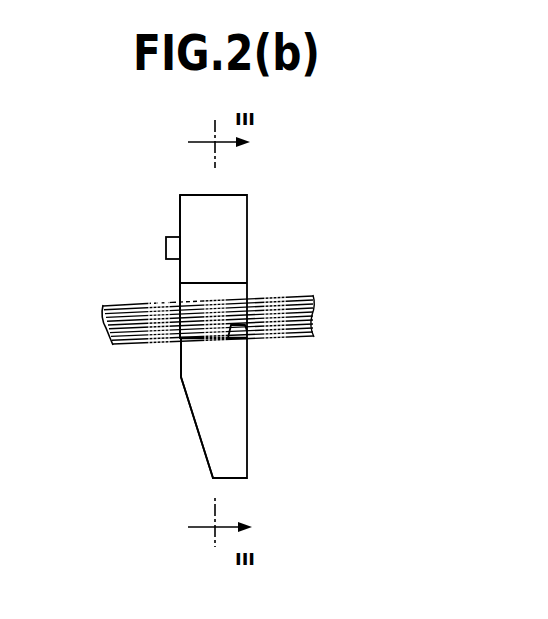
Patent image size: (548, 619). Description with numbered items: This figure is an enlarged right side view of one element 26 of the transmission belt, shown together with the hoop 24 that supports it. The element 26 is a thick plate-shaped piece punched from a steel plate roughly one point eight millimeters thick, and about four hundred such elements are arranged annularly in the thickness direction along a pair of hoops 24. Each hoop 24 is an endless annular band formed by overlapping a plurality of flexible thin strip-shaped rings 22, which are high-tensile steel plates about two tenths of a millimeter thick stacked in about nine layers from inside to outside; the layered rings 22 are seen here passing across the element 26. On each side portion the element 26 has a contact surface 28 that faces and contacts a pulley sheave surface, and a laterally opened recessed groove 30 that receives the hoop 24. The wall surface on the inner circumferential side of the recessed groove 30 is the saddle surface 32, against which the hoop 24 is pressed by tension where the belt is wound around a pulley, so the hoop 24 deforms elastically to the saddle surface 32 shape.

The ring 22 is at (133, 360).
The hoop 24 is at (336, 309).
The element 26 is at (156, 187).
The contact surface 28 is at (220, 427).
The recessed groove 30 is at (168, 288).
The saddle surface 32 is at (248, 326).